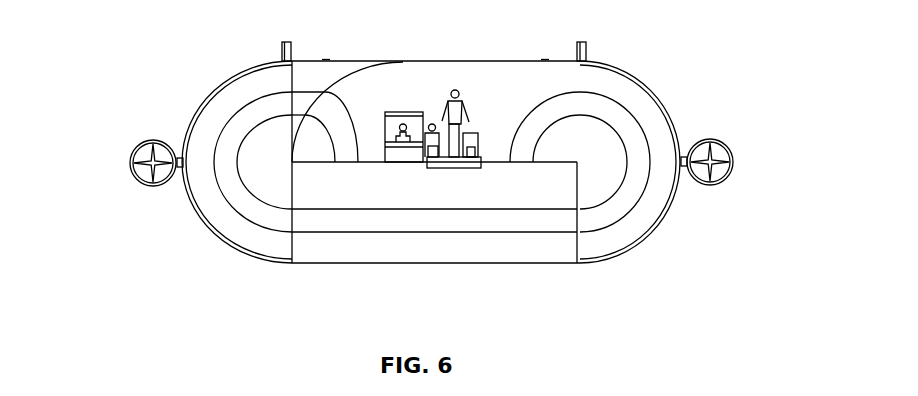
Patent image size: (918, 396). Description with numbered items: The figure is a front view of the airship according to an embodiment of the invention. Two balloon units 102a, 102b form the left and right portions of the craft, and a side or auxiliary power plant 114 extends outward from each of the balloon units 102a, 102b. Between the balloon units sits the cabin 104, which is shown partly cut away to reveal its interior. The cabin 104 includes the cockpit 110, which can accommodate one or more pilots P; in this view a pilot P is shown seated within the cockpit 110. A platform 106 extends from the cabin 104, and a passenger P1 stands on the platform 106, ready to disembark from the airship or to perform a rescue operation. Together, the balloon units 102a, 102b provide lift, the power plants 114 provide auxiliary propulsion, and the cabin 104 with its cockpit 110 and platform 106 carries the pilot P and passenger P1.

The balloon unit 102a is at (211, 106).
The balloon unit 102b is at (633, 92).
The cabin 104 is at (427, 93).
The platform 106 is at (478, 163).
The cockpit 110 is at (369, 159).
The side or auxiliary power plant 114 is at (133, 152).
The pilot P is at (403, 122).
The passenger P1 is at (457, 100).